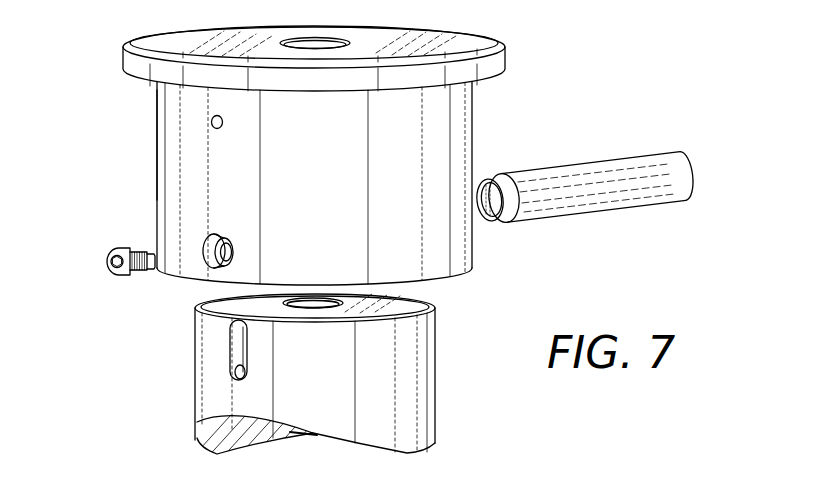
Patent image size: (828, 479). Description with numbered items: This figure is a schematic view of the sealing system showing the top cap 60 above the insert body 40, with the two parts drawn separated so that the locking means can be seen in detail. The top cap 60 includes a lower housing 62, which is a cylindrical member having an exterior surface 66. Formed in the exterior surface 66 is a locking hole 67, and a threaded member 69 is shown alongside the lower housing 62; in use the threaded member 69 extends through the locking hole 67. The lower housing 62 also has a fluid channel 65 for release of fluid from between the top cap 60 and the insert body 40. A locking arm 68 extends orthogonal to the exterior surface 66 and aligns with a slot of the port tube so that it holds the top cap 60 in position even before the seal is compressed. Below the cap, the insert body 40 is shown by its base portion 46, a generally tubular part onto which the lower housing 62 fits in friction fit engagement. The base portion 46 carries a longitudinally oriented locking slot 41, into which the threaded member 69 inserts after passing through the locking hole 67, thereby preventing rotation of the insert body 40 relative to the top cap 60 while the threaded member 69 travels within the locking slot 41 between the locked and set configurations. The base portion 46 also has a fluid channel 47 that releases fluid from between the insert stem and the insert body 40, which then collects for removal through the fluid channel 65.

The insert body 40 is at (425, 398).
The locking slot 41 is at (240, 343).
The base portion 46 is at (427, 340).
The fluid channel 47 is at (240, 373).
The top cap 60 is at (460, 143).
The lower housing 62 is at (462, 252).
The fluid channel 65 is at (208, 127).
The exterior surface 66 is at (163, 122).
The locking hole 67 is at (207, 238).
The locking arm 68 is at (598, 202).
The threaded member 69 is at (113, 272).